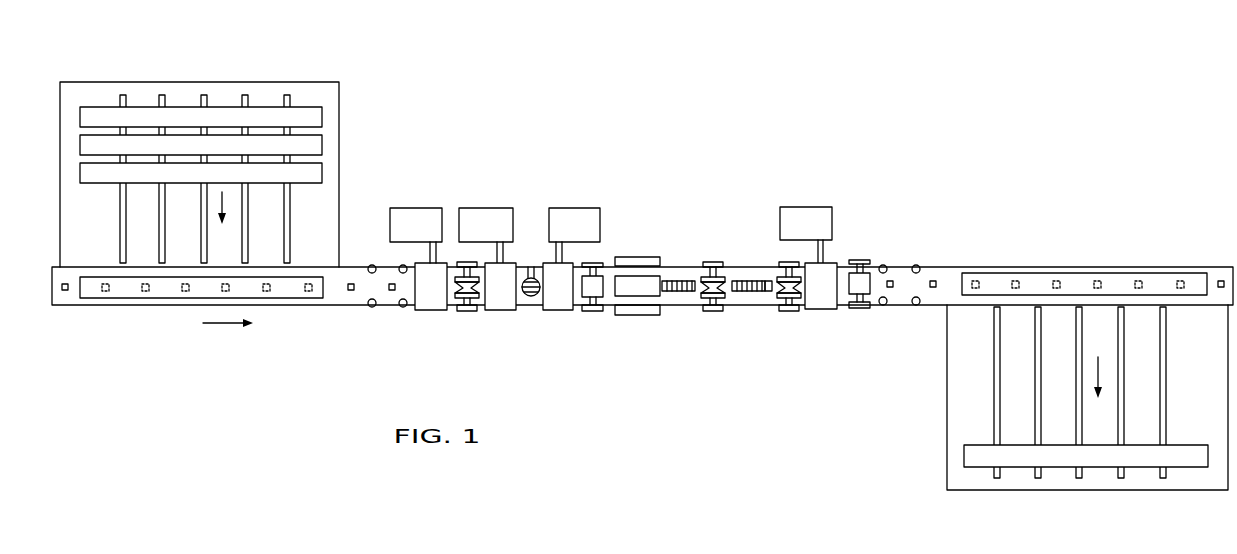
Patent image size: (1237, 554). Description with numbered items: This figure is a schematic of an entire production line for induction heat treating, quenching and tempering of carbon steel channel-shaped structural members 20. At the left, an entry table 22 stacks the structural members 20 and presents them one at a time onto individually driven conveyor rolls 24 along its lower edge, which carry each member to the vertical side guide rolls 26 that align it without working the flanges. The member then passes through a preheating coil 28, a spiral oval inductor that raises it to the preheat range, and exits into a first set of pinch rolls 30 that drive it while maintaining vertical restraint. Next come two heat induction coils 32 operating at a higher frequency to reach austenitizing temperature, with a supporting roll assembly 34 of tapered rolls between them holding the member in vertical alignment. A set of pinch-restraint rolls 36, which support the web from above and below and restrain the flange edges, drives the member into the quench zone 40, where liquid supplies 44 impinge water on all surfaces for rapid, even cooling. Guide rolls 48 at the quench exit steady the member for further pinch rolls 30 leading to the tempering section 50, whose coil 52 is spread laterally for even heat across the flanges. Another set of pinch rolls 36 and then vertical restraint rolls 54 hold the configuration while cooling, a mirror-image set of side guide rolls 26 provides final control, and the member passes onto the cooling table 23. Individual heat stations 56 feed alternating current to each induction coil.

The structural member 20 is at (317, 172).
The entry table 22 is at (326, 80).
The cooling table 23 is at (940, 440).
The conveyor rolls 24 is at (66, 291).
The vertical side guide rolls 26 is at (372, 265).
The preheating coil 28 is at (434, 316).
The pinch rolls 30 is at (471, 313).
The heat induction coils 32 is at (512, 317).
The supporting roll assembly 34 is at (531, 270).
The pinch-restraint rolls 36 is at (600, 300).
The quench zone 40 is at (637, 252).
The liquid supplies 44 is at (647, 288).
The guide rolls 48 is at (680, 281).
The tempering section 50 is at (827, 315).
The coil 52 is at (883, 265).
The vertical restraint rolls 54 is at (403, 265).
The heat stations 56 is at (432, 214).